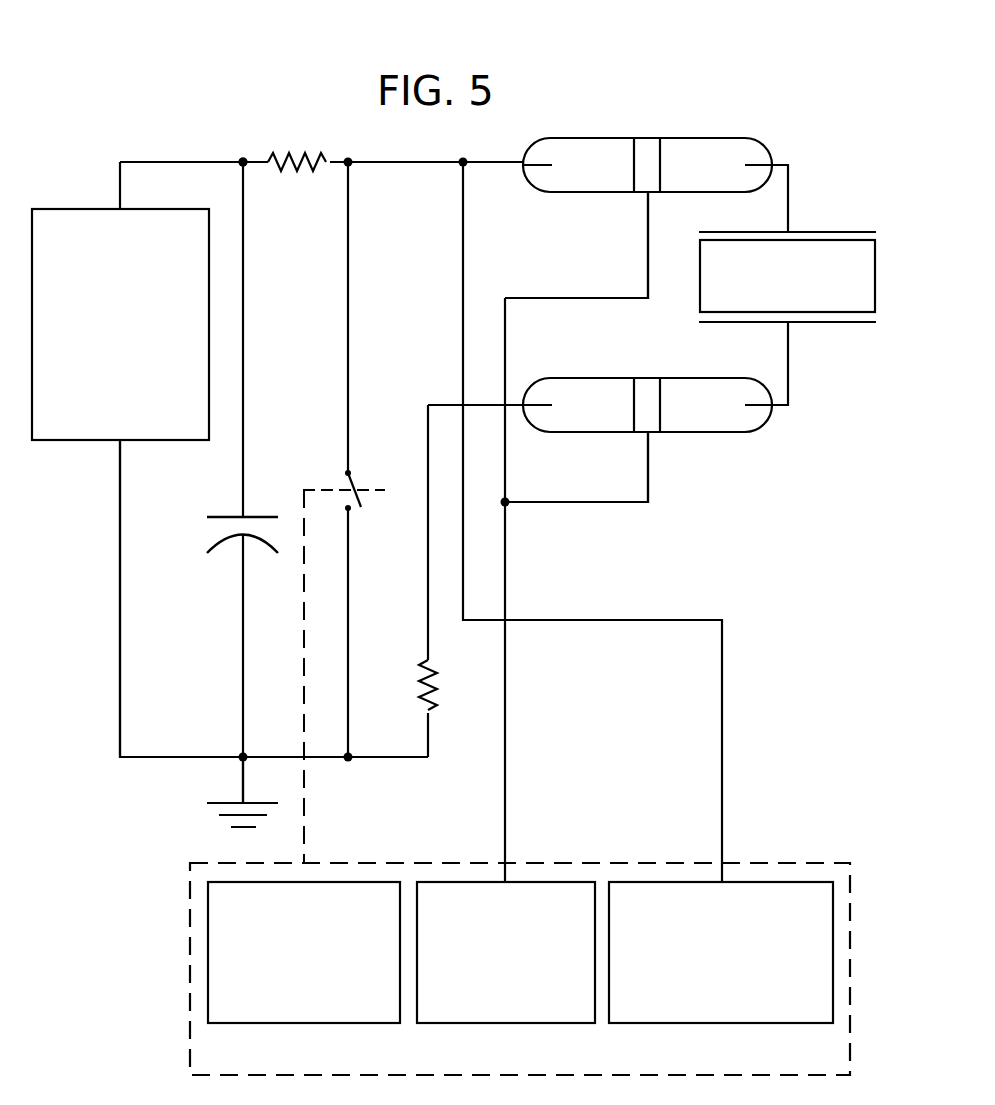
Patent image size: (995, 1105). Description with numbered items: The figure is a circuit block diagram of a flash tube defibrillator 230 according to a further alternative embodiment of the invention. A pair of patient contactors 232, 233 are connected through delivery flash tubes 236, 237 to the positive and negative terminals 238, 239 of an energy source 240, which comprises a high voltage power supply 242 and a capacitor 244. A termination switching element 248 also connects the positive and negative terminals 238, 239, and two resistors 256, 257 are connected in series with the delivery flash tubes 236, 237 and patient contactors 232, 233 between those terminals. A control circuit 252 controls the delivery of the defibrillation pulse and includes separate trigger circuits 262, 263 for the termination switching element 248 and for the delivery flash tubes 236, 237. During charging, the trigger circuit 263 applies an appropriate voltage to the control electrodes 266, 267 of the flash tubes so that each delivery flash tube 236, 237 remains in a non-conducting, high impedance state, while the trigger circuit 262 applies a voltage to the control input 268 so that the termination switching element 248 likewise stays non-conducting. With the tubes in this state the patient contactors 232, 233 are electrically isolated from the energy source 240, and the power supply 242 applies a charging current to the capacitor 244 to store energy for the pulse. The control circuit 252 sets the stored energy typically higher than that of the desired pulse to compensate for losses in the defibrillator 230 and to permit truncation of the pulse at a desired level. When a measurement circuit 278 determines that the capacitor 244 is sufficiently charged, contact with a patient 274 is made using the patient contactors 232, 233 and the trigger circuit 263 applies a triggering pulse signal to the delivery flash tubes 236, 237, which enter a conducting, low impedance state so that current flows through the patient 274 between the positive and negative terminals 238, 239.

The defibrillator 230 is at (633, 133).
The patient contactor 232 is at (807, 230).
The patient contactor 233 is at (805, 324).
The delivery flash tube 236 is at (575, 196).
The delivery flash tube 237 is at (594, 376).
The positive terminal 238 is at (243, 158).
The negative terminal 239 is at (243, 753).
The energy source 240 is at (262, 291).
The high voltage power supply 242 is at (150, 441).
The capacitor 244 is at (210, 550).
The termination switching element 248 is at (357, 482).
The control circuit 252 is at (822, 862).
The resistor 256 is at (297, 178).
The resistor 257 is at (415, 688).
The trigger circuit 262 is at (365, 880).
The trigger circuit 263 is at (545, 880).
The control electrode 266 is at (648, 215).
The control electrode 267 is at (650, 440).
The control input 268 is at (335, 488).
The patient 274 is at (690, 284).
The measurement circuit 278 is at (680, 880).